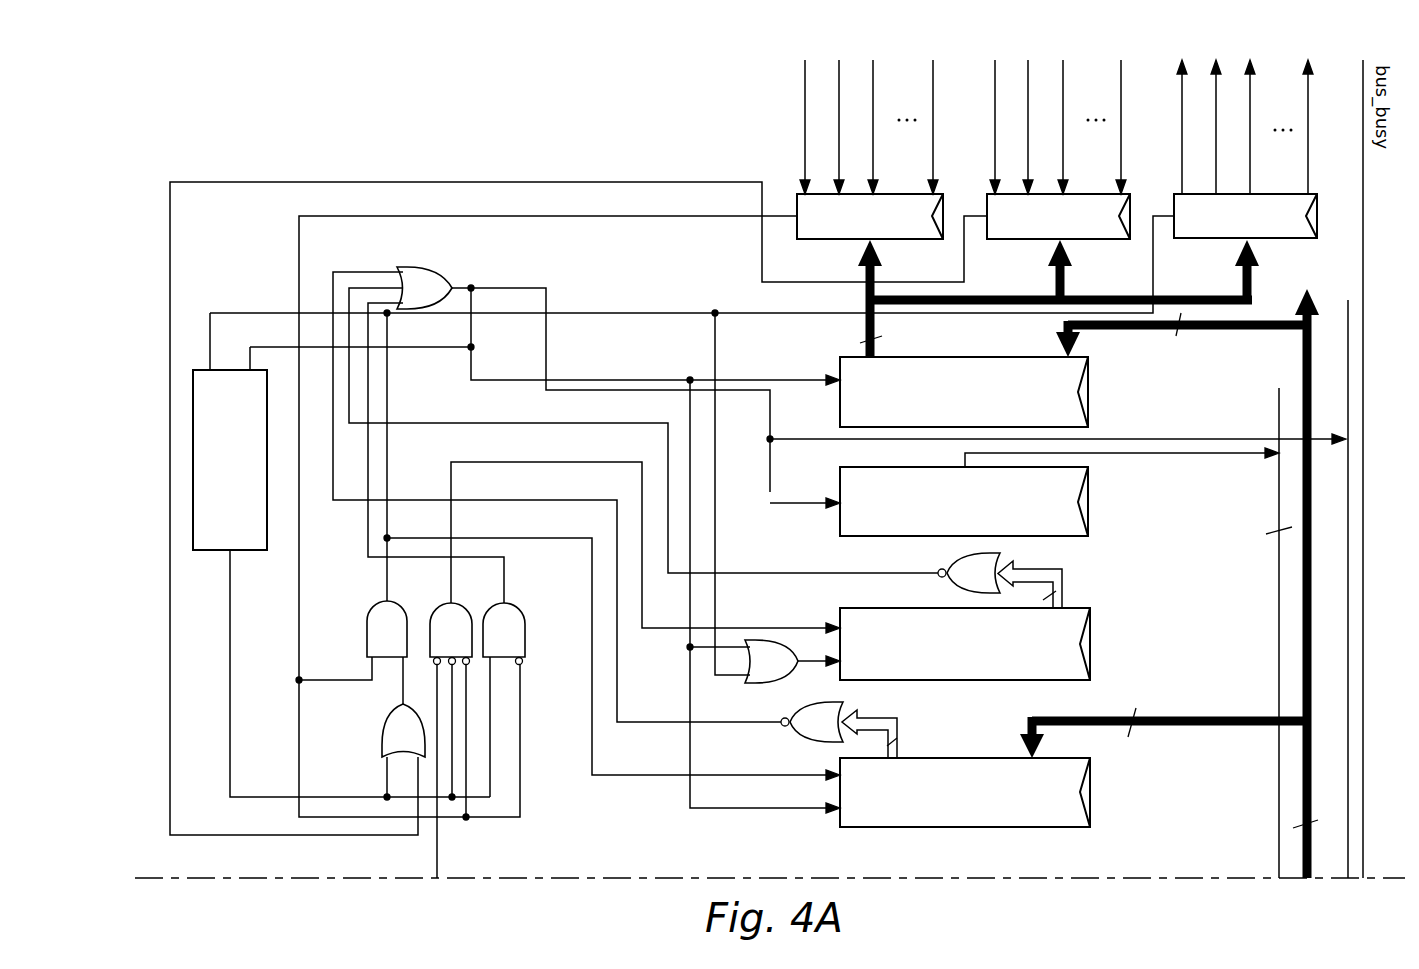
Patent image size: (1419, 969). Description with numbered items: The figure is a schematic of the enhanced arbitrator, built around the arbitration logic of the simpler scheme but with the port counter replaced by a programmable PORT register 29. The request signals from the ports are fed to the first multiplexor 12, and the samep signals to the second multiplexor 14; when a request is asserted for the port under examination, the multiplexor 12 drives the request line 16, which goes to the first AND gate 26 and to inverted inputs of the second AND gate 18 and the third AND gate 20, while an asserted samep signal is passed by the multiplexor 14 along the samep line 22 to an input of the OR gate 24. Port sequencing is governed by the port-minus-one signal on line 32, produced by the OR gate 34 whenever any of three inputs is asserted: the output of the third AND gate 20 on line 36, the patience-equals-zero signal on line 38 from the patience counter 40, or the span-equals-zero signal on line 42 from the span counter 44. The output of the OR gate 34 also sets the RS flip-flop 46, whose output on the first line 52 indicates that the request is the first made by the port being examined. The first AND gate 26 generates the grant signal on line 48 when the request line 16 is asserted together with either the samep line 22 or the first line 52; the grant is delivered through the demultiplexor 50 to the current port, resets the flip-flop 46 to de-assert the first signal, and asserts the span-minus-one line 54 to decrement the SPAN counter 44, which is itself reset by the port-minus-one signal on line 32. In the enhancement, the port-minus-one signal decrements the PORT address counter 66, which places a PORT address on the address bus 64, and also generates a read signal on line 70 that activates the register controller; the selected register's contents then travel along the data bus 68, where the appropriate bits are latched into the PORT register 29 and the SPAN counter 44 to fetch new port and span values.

The first multiplexor 12 is at (832, 240).
The second multiplexor 14 is at (1020, 240).
The demultiplexor 50 is at (1208, 239).
The PORT register 29 is at (1092, 392).
The PORT address counter 66 is at (1092, 503).
The patience counter 40 is at (1094, 652).
The SPAN counter 44 is at (1094, 793).
The RS flip-flop 46 is at (193, 462).
The OR gate 34 is at (437, 268).
The second AND gate 18 is at (461, 605).
The third AND gate 20 is at (527, 620).
The OR gate 24 is at (384, 746).
The first AND gate 26 is at (407, 607).
The request line 16 is at (720, 217).
The samep line 22 is at (476, 182).
The port-1 signal line 32 is at (473, 363).
The third AND gate output line 36 is at (505, 586).
The patience=0 signal line 38 is at (442, 422).
The span=0 signal line 42 is at (366, 271).
The grant signal line 48 is at (640, 312).
The first line 52 is at (233, 748).
The span-1 line 54 is at (642, 776).
The address bus 64 is at (1279, 622).
The data bus 68 is at (1302, 757).
The read line 70 is at (1348, 788).